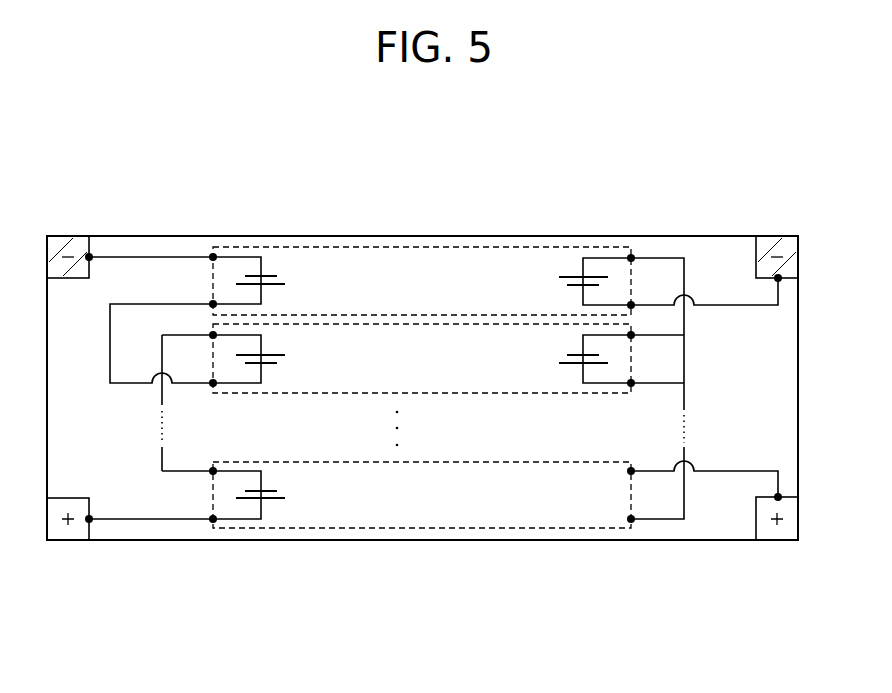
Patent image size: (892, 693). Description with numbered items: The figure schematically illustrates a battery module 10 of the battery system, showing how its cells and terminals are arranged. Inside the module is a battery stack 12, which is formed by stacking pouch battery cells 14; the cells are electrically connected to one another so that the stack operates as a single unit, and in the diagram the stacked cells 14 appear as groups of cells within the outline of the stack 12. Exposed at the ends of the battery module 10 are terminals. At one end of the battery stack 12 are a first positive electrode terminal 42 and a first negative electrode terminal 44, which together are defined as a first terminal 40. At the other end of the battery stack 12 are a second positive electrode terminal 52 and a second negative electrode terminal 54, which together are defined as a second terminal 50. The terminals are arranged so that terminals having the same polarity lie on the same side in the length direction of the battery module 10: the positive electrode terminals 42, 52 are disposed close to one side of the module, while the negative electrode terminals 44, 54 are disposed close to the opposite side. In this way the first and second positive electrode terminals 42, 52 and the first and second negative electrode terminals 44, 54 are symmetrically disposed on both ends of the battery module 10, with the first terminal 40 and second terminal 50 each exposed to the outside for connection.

The battery module 10 is at (197, 208).
The battery stack 12 is at (331, 236).
The pouch battery cells 14 is at (443, 274).
The first terminal 40 is at (75, 389).
The first positive electrode terminal 42 is at (64, 541).
The first negative electrode terminal 44 is at (64, 244).
The second terminal 50 is at (785, 390).
The second positive electrode terminal 52 is at (777, 541).
The second negative electrode terminal 54 is at (777, 244).